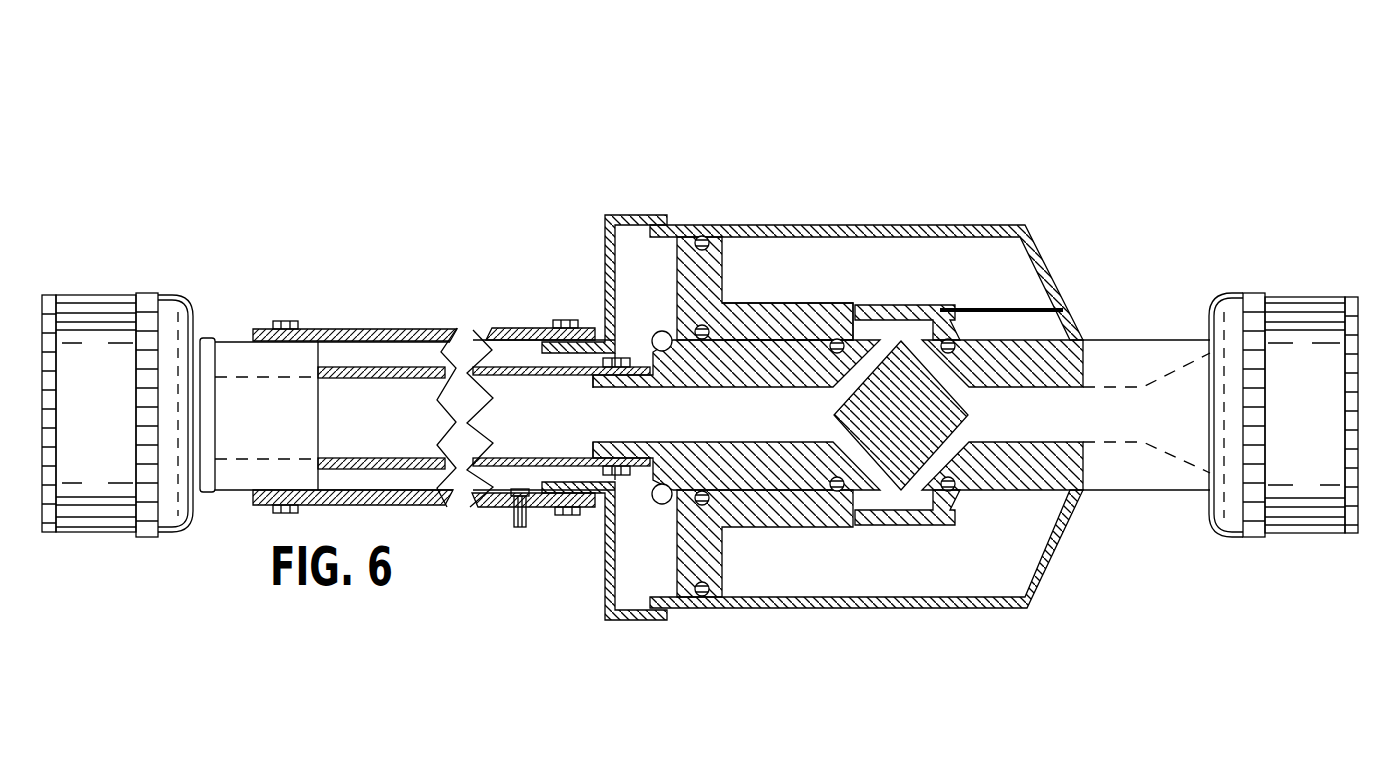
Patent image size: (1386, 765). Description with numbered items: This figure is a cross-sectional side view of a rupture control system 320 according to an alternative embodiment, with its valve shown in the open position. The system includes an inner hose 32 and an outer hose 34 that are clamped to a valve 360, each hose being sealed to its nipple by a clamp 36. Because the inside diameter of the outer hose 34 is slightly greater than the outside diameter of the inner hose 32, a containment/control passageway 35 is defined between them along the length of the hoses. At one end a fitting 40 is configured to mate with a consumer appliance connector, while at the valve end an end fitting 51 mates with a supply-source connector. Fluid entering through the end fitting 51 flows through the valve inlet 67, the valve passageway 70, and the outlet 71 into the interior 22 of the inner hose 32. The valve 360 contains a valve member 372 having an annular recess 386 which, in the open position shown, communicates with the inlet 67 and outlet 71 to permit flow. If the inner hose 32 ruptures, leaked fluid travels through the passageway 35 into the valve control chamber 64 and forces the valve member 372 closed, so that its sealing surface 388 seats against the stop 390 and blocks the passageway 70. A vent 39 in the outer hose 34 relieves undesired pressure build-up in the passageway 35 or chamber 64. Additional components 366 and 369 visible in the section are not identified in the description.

The interior of inner hose 22 is at (398, 417).
The inner hose 32 is at (340, 372).
The outer hose 34 is at (393, 330).
The containment/control passageway 35 is at (505, 353).
The clamp 36 is at (282, 321).
The vent 39 is at (513, 523).
The fitting 40 is at (120, 498).
The end fitting 51 is at (1283, 508).
The valve control chamber 64 is at (645, 552).
The valve inlet 67 is at (992, 420).
The valve passageway 70 is at (820, 405).
The valve outlet 71 is at (827, 325).
The rupture control system 320 is at (1147, 531).
The valve 360 is at (1053, 573).
The housing 366 is at (987, 223).
The seal 369 is at (1025, 303).
The valve member 372 is at (718, 272).
The annular recess 386 is at (868, 353).
The sealing surface 388 is at (807, 470).
The stop 390 is at (905, 435).